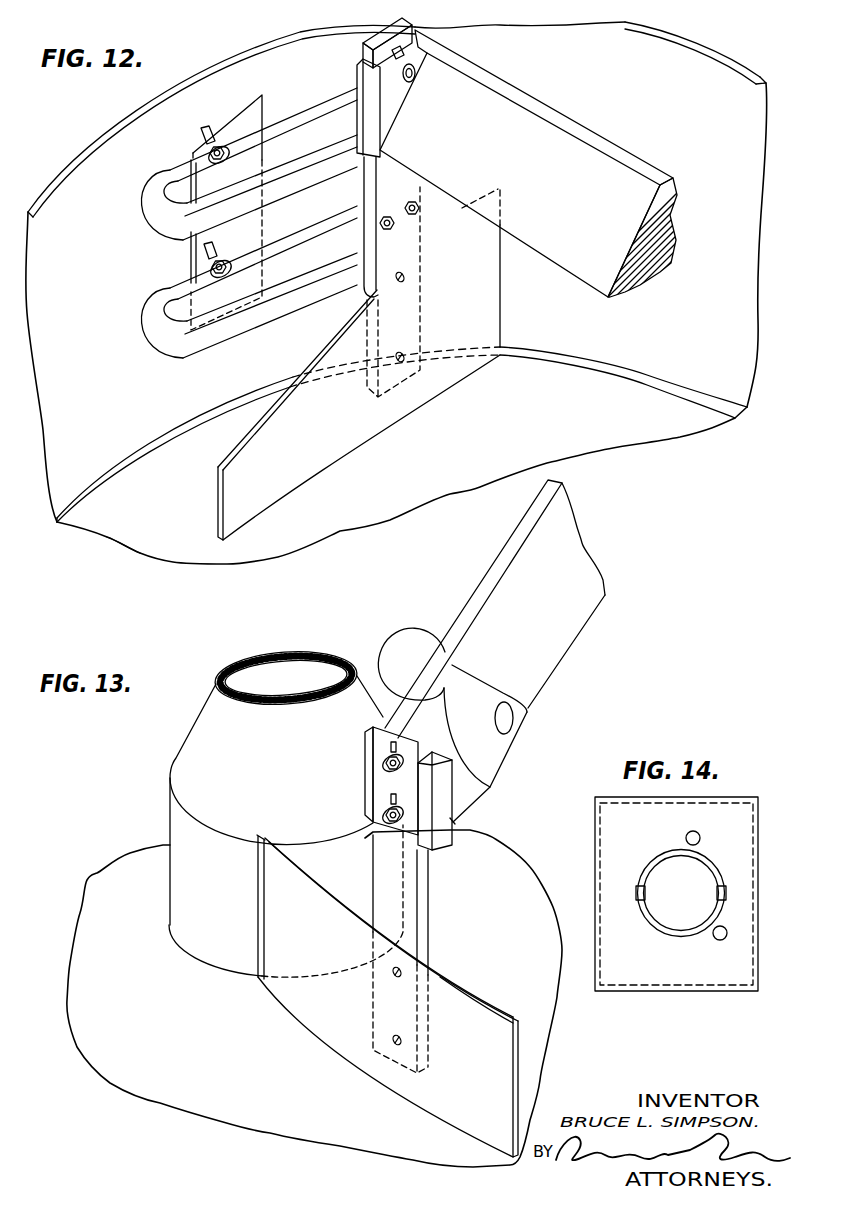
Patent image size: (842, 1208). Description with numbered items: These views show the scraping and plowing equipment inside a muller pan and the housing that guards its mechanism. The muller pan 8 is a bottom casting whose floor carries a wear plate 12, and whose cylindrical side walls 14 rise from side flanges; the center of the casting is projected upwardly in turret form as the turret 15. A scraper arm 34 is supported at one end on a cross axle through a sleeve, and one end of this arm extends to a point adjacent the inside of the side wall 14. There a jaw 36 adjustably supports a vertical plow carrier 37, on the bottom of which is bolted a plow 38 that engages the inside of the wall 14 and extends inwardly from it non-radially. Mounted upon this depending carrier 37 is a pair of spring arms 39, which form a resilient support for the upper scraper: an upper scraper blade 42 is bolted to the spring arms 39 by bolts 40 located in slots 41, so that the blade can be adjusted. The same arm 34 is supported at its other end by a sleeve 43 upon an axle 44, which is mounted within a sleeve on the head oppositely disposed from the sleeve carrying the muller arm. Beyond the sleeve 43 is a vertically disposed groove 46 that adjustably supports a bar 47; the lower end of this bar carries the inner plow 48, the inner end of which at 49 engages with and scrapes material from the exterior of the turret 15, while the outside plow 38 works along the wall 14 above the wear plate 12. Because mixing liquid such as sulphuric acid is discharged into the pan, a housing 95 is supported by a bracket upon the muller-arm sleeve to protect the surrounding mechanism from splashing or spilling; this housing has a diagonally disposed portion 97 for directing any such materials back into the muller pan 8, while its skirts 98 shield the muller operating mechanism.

In FIG. 12, the muller pan 8 is at (57, 527).
In FIG. 12, the wear plate 12 is at (102, 534).
In FIG. 13, the wear plate 12 is at (184, 1006).
In FIG. 12, the cylindrical side walls 14 is at (134, 117).
In FIG. 13, the turret 15 is at (169, 822).
In FIG. 12, the scraper arm 34 is at (624, 149).
In FIG. 13, the scraper arm 34 is at (496, 559).
In FIG. 12, the jaw 36 is at (363, 66).
In FIG. 12, the vertical plow carrier 37 is at (368, 173).
In FIG. 12, the plow 38 is at (490, 280).
In FIG. 12, the spring arms 39 is at (327, 114).
In FIG. 12, the bolts 40 is at (210, 145).
In FIG. 12, the slots 41 is at (227, 151).
In FIG. 12, the upper scraper blade 42 is at (248, 107).
In FIG. 13, the sleeve 43 is at (490, 677).
In FIG. 13, the axle 44 is at (512, 724).
In FIG. 13, the vertically disposed groove 46 is at (430, 755).
In FIG. 13, the bar 47 is at (428, 920).
In FIG. 13, the inner plow 48 is at (480, 973).
In FIG. 13, the inner end of inner plow 49 is at (256, 933).
In FIG. 14, the housing 95 is at (676, 932).
In FIG. 14, the diagonally disposed portion 97 is at (748, 874).
In FIG. 14, the skirts 98 is at (595, 864).